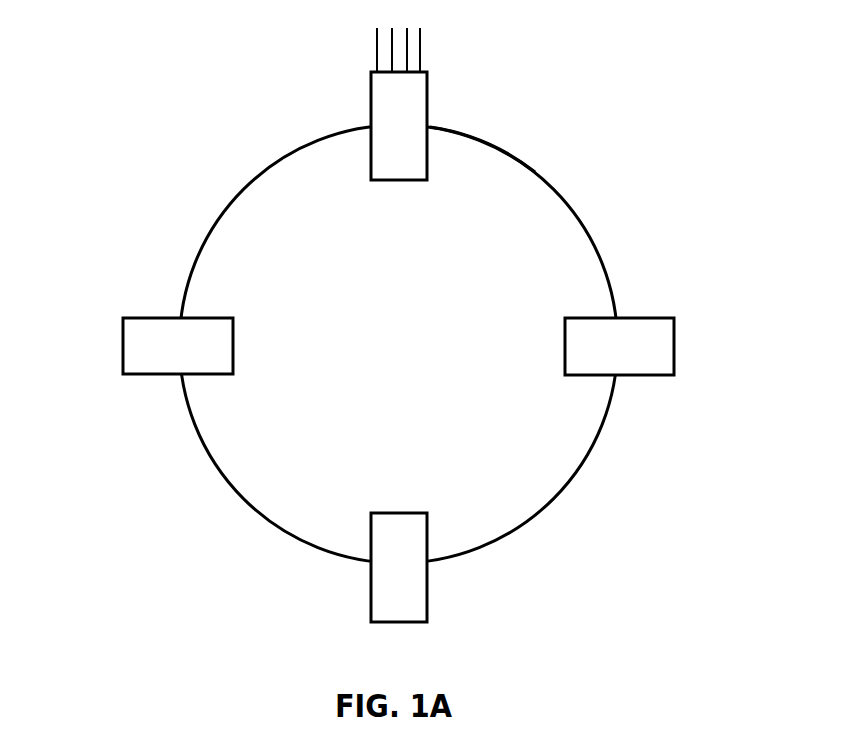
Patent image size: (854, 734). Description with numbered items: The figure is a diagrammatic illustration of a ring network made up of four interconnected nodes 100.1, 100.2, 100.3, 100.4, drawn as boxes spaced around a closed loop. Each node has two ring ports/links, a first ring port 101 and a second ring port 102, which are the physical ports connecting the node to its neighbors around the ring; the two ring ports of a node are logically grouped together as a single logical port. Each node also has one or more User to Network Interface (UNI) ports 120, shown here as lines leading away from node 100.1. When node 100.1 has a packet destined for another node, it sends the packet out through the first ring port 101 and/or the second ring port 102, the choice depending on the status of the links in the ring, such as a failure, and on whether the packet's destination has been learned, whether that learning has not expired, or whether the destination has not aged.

The ring port #1 101 is at (277, 162).
The ring port #2 102 is at (535, 172).
The node 100.1 is at (427, 97).
The node 100.2 is at (152, 376).
The node 100.3 is at (656, 376).
The node 100.4 is at (427, 594).
The User to Network Interface (UNI) port 120 is at (420, 45).